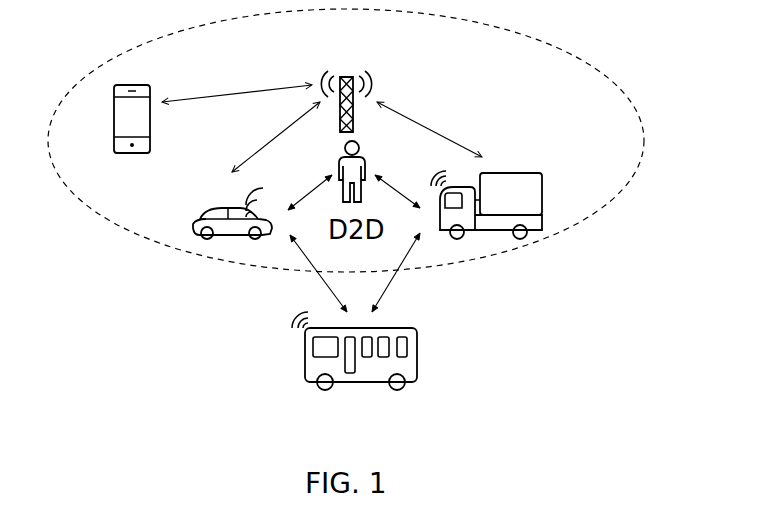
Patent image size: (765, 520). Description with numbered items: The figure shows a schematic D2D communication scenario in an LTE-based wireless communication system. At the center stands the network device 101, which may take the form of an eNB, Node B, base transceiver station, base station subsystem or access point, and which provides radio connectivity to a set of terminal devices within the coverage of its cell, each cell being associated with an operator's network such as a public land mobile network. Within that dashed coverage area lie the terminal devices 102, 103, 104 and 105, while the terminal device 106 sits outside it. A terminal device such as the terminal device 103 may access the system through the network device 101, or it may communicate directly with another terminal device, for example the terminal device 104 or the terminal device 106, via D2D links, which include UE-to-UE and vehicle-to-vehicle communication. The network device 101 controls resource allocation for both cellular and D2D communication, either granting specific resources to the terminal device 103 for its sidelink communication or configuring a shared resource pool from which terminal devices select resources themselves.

The network device 101 is at (405, 52).
The terminal device 102 is at (102, 132).
The terminal device 103 is at (187, 238).
The terminal device 104 is at (345, 143).
The terminal device 105 is at (548, 207).
The terminal device 106 is at (293, 357).